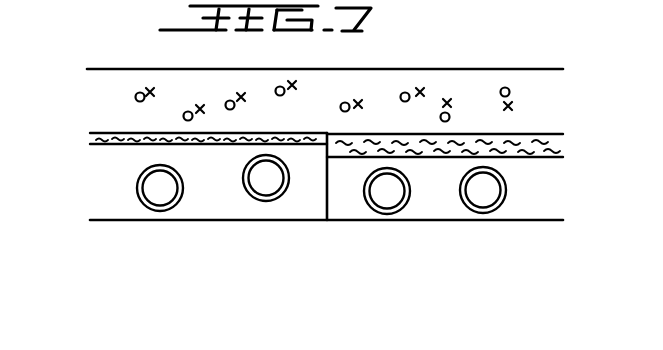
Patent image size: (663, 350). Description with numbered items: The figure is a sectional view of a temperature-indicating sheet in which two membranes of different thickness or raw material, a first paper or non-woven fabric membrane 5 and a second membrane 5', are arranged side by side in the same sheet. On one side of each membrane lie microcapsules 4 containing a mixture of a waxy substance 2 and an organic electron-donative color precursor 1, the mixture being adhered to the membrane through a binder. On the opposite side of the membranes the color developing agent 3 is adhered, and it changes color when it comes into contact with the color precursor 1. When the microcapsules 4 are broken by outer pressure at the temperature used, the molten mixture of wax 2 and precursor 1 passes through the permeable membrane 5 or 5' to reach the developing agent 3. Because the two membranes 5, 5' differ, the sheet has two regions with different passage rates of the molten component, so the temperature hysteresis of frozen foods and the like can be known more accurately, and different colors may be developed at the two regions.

The organic electron-donative color precursor 1 is at (281, 87).
The waxy substance 2 is at (485, 195).
The color developing agent 3 is at (421, 89).
The microcapsules 4 is at (387, 213).
The paper or non-woven fabric membrane 5 is at (182, 141).
The membrane 5' is at (472, 149).